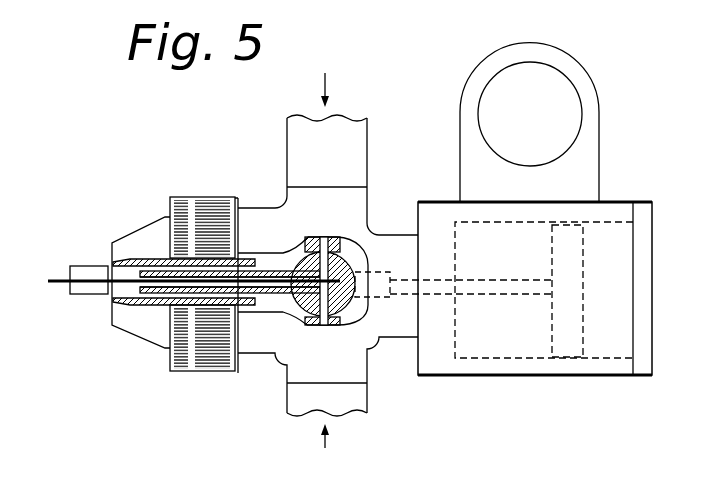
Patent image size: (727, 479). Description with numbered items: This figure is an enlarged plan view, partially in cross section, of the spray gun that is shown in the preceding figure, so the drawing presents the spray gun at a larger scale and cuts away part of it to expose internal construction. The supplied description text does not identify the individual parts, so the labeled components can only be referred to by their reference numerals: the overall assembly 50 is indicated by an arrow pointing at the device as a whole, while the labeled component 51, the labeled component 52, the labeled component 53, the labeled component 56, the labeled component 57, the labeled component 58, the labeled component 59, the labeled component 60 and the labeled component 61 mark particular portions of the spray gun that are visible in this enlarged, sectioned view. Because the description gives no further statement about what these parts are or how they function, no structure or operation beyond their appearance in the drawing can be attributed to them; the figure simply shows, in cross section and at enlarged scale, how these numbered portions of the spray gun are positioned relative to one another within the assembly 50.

The valve assembly 50 is at (453, 403).
The valve body 51 is at (273, 207).
The mounting loop 52 is at (600, 97).
The mounting opening 53 is at (512, 123).
The actuator rod 56 is at (85, 266).
The valve seat housing 57 is at (283, 257).
The ball valve member 58 is at (345, 312).
The mounting flange 59 is at (133, 232).
The solenoid coil 60 is at (170, 197).
The actuator housing 61 is at (523, 377).